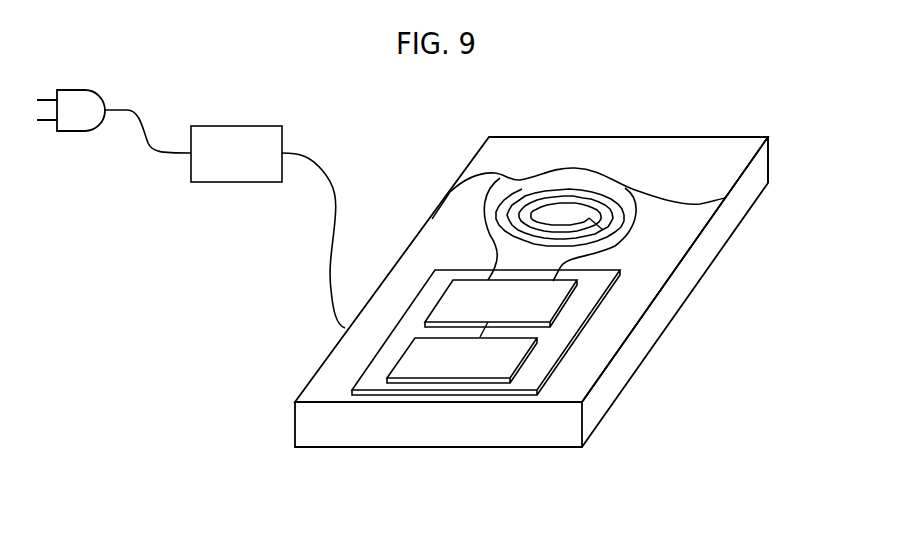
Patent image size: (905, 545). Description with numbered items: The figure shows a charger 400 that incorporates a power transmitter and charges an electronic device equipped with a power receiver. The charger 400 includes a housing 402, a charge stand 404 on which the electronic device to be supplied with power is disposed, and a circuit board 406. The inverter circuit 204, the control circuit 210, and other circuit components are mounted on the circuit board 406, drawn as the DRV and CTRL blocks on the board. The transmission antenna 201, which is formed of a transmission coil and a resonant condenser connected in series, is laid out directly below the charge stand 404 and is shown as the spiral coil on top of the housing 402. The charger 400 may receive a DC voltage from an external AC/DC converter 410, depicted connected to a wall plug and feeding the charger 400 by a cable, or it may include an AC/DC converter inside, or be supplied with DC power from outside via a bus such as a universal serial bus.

The transmission antenna 201 is at (633, 218).
The inverter circuit 204 is at (547, 308).
The control circuit 210 is at (510, 357).
The charger 400 is at (453, 430).
The housing 402 is at (760, 167).
The charge stand 404 is at (518, 176).
The circuit board 406 is at (600, 283).
The AC/DC converter 410 is at (233, 183).